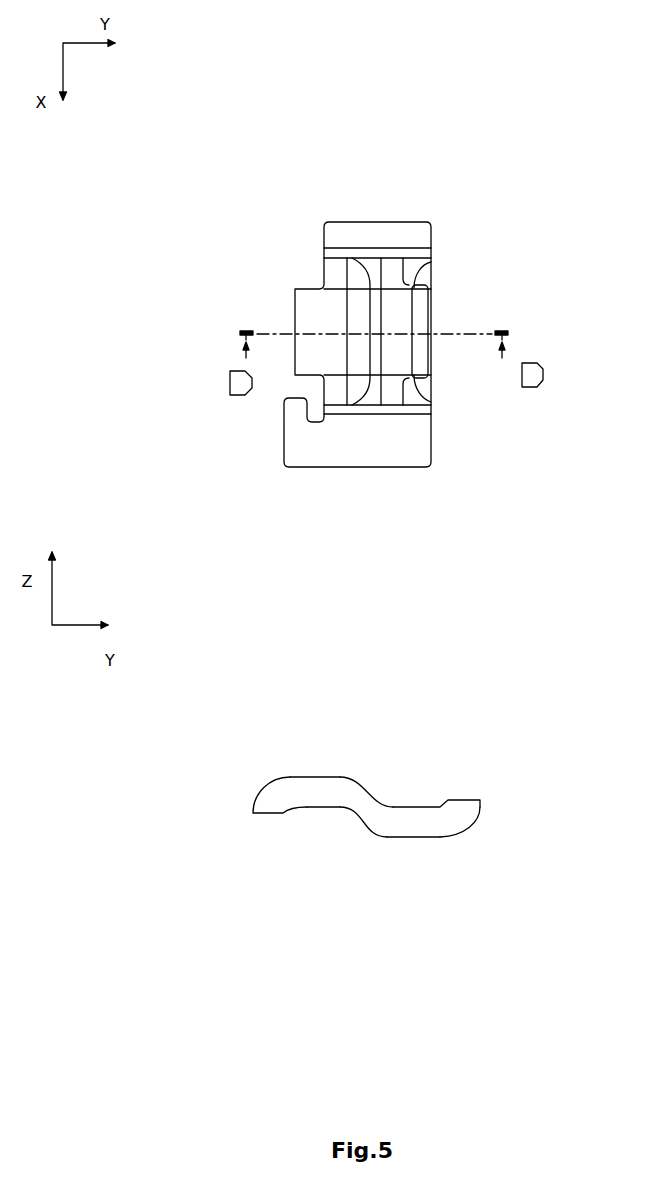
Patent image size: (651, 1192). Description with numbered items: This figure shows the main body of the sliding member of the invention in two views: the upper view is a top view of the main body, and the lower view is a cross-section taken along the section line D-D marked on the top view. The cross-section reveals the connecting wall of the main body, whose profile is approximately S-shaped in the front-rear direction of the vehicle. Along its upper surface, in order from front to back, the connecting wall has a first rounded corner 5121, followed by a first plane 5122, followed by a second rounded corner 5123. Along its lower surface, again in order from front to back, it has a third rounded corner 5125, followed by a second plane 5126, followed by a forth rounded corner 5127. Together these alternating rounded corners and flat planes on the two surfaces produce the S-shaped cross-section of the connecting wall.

The first rounded corner 5121 is at (277, 783).
The first plane 5122 is at (317, 776).
The second rounded corner 5123 is at (363, 783).
The third rounded corner 5125 is at (375, 837).
The second plane 5126 is at (418, 838).
The forth rounded corner 5127 is at (463, 837).